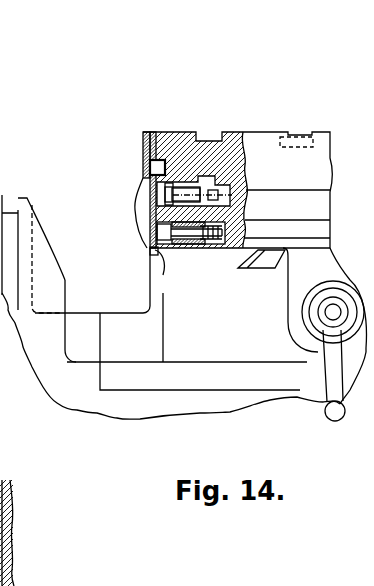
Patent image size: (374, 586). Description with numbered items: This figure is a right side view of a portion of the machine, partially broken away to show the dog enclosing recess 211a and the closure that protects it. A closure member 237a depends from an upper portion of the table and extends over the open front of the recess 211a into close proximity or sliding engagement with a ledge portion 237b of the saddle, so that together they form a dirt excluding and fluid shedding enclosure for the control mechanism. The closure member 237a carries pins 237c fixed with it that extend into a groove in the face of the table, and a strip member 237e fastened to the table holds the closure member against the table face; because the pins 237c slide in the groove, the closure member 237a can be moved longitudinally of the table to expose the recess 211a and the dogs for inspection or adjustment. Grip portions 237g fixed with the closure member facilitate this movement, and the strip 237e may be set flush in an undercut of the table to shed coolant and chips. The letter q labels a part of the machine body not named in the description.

The chuck body q is at (230, 163).
The strip member 237e is at (143, 160).
The pins 237c is at (178, 183).
The recess 211a is at (190, 187).
The grip portions 237g is at (152, 252).
The closure member 237a is at (152, 255).
The ledge portion 237b is at (163, 275).